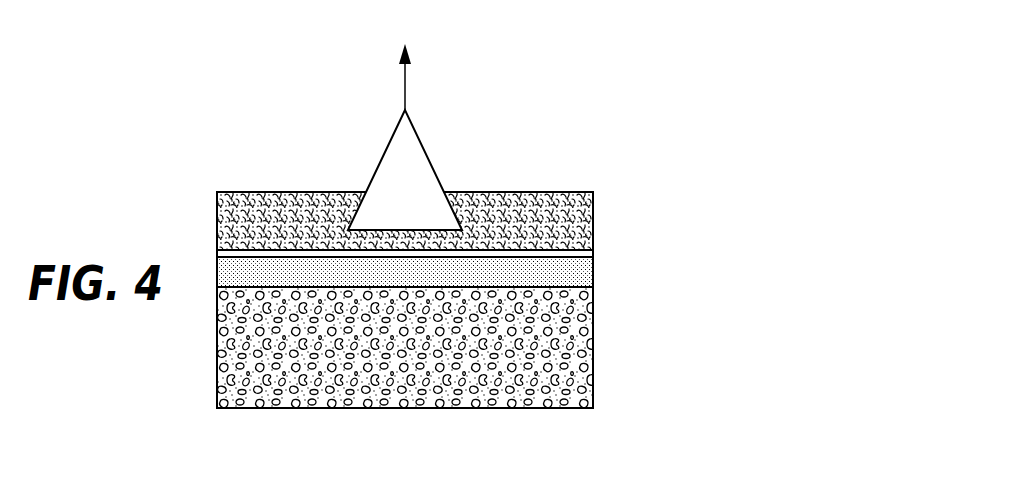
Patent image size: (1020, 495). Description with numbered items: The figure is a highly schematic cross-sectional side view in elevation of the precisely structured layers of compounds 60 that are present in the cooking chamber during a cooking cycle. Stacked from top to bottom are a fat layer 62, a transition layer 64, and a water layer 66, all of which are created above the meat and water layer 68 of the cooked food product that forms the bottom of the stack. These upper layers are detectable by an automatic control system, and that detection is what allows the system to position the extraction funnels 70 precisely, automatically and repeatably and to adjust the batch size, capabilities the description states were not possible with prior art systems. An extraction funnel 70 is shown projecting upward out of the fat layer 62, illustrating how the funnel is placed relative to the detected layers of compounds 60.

The layers of compounds 60 is at (452, 205).
The fat layer 62 is at (593, 205).
The transition layer 64 is at (593, 250).
The water layer 66 is at (593, 267).
The meat and water layer 68 is at (593, 347).
The extraction funnel 70 is at (416, 131).